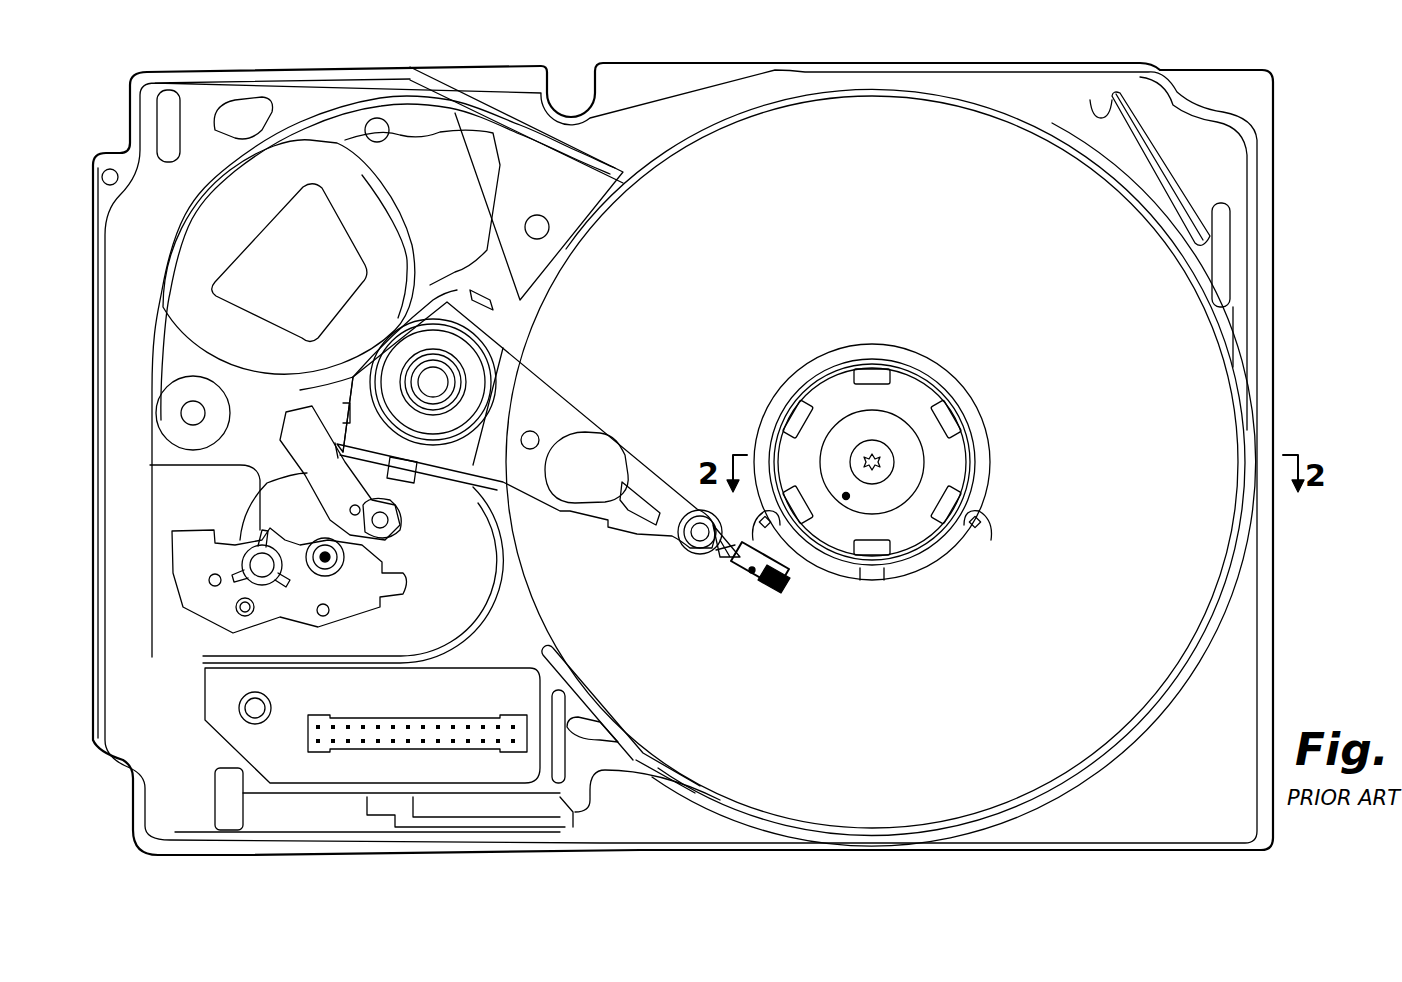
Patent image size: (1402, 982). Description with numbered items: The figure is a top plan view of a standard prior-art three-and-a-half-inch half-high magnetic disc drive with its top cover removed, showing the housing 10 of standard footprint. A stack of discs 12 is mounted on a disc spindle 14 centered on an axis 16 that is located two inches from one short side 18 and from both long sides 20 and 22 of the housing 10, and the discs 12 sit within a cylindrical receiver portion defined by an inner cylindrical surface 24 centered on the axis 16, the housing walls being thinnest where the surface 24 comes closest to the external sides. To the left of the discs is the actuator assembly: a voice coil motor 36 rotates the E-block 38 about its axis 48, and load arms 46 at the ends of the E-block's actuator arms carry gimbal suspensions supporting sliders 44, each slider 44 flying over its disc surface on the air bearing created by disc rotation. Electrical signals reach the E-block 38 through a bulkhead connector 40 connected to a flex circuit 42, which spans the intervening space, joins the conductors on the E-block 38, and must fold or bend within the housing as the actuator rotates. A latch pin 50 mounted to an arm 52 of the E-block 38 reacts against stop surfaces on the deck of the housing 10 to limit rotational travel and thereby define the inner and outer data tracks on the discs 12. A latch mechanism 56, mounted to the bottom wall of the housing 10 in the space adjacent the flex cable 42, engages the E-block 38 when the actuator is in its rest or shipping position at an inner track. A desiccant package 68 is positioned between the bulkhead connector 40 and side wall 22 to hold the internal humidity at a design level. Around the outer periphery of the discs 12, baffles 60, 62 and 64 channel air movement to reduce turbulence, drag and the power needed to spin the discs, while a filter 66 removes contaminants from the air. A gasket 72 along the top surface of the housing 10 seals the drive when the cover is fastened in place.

The housing 10 is at (1275, 641).
The discs 12 is at (1132, 377).
The disc spindle 14 is at (917, 460).
The axis 16 is at (866, 456).
The short side 18 is at (1272, 313).
The long side 20 is at (1188, 70).
The long side 22 is at (1090, 850).
The inner cylindrical surface 24 is at (945, 815).
The voice coil motor 36 is at (393, 153).
The E-block 38 is at (610, 432).
The bulkhead connector 40 is at (433, 730).
The flex circuit 42 is at (466, 630).
The slider 44 is at (770, 584).
The load arm 46 is at (735, 568).
The axis 48 is at (460, 378).
The latch pin 50 is at (375, 530).
The arm 52 is at (300, 447).
The latch mechanism 56 is at (298, 520).
The baffle 60 is at (602, 742).
The baffle 62 is at (585, 182).
The baffle 64 is at (1235, 252).
The filter 66 is at (1165, 152).
The desiccant package 68 is at (575, 825).
The gasket 72 is at (1262, 360).